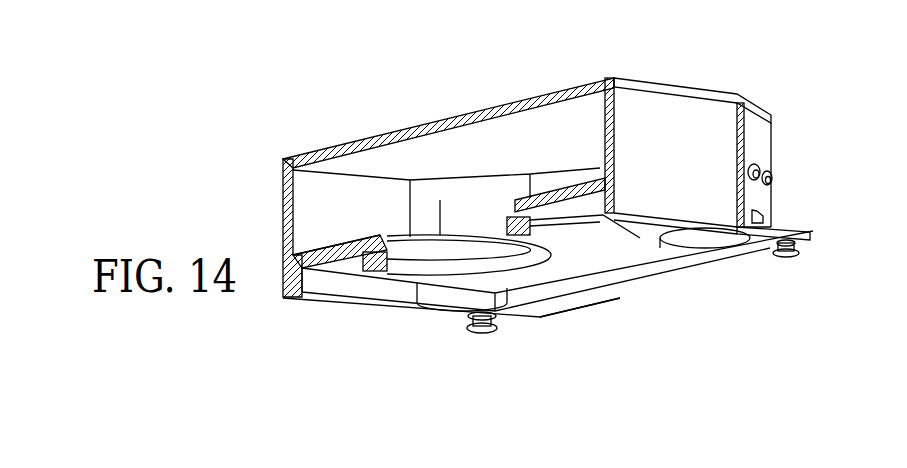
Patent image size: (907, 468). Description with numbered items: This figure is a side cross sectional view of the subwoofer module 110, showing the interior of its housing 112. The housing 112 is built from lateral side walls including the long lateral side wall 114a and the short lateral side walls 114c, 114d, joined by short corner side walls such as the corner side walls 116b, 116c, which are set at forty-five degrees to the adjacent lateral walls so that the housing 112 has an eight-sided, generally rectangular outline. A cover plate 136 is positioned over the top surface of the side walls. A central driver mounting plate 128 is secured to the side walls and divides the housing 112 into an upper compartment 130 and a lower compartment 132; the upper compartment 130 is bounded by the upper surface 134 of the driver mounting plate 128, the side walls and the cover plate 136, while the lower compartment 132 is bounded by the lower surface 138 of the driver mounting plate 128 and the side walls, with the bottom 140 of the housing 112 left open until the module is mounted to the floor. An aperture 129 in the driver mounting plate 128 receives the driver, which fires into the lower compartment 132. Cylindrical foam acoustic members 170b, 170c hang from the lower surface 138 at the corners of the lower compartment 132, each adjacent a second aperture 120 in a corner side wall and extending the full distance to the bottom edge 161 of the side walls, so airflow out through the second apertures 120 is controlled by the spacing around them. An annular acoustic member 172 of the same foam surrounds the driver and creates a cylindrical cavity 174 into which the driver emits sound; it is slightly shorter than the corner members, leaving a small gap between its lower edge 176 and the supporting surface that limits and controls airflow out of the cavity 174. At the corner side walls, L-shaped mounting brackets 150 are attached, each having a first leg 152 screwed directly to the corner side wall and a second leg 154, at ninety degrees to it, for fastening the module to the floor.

The subwoofer module 110 is at (532, 72).
The housing 112 is at (432, 165).
The long lateral side wall 114a is at (575, 172).
The short lateral side wall 114c is at (667, 110).
The short lateral side wall 114d is at (283, 190).
The corner side wall 116b is at (752, 120).
The corner side wall 116c is at (423, 200).
The second aperture 120 is at (760, 213).
The central driver mounting plate 128 is at (340, 265).
The aperture 129 is at (418, 243).
The upper compartment 130 is at (330, 193).
The lower compartment 132 is at (318, 288).
The upper surface 134 is at (560, 185).
The cover plate 136 is at (466, 160).
The lower surface 138 is at (640, 248).
The bottom 140 is at (688, 258).
The mounting bracket 150 is at (812, 235).
The first leg 152 is at (763, 160).
The second leg 154 is at (810, 232).
The bottom edge 161 is at (568, 287).
The foam acoustic member 170b is at (735, 250).
The foam acoustic member 170c is at (457, 313).
The annular acoustic member 172 is at (540, 272).
The cylindrical cavity 174 is at (443, 262).
The lower edge 176 is at (580, 257).